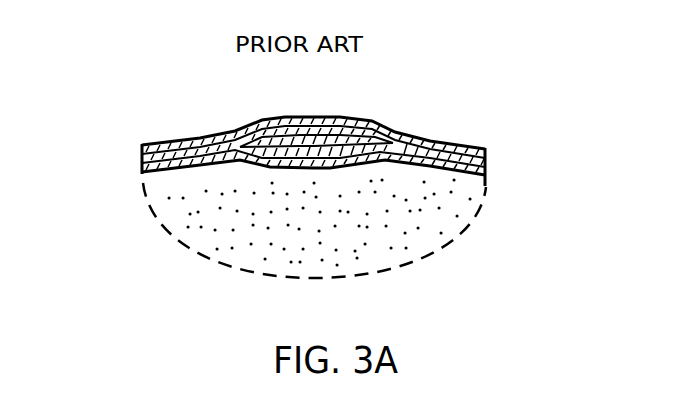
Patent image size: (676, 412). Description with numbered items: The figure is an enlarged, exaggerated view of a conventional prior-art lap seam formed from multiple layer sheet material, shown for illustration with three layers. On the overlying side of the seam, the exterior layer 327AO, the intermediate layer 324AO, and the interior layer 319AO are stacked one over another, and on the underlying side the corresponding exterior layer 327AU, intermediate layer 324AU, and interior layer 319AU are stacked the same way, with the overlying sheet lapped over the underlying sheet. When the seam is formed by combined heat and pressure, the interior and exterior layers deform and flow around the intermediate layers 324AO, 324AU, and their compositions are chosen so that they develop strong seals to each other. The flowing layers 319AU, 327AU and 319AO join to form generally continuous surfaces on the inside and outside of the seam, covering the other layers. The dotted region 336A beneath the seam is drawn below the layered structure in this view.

The overlying exterior layer 327AO is at (140, 150).
The overlying intermediate layer 324AO is at (140, 162).
The overlying interior layer 319AO is at (140, 176).
The underlying exterior layer 327AU is at (487, 152).
The underlying intermediate layer 324AU is at (487, 157).
The underlying interior layer 319AU is at (487, 171).
The underlying tissue/substrate region 336A is at (243, 240).